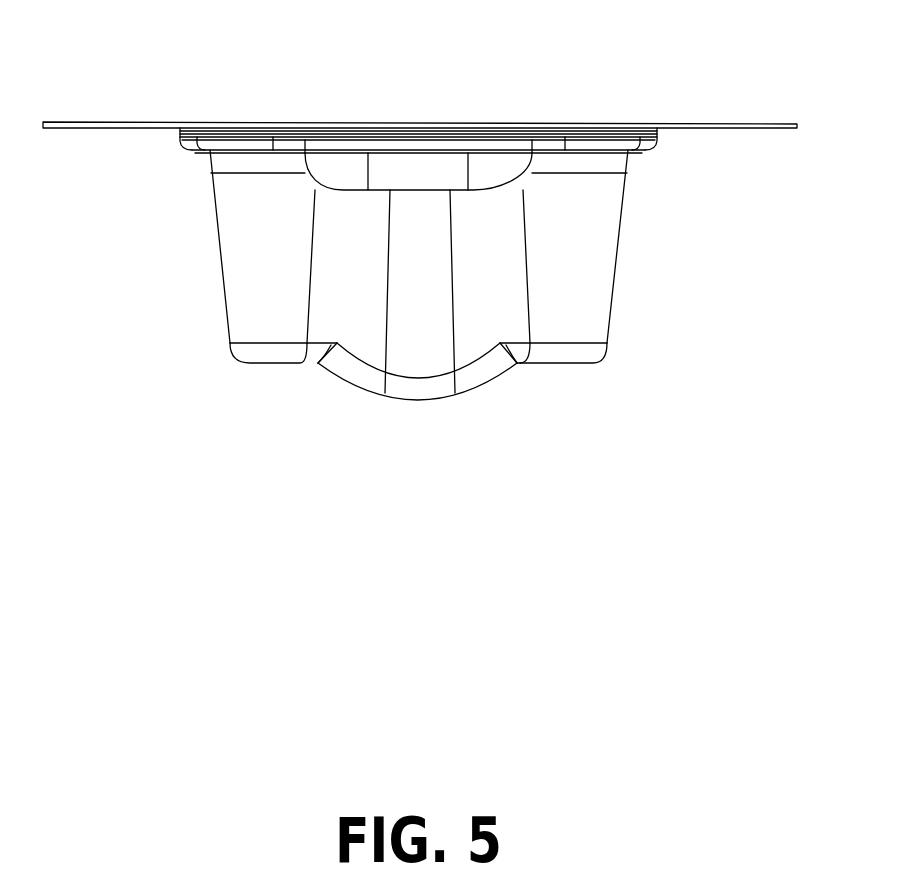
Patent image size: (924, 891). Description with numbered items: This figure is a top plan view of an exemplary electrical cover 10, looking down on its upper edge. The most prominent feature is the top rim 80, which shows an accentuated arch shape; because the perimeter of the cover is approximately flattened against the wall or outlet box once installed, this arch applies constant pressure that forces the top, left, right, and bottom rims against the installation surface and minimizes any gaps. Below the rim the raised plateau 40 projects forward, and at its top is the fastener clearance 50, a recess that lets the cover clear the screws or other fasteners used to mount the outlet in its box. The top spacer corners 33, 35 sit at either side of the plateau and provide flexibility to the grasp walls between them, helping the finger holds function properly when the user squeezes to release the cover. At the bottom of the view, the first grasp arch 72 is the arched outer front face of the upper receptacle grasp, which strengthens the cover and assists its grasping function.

The electrical cover 10 is at (666, 762).
The top spacer corner 33 is at (210, 167).
The top spacer corner 35 is at (628, 162).
The raised plateau 40 is at (515, 143).
The fastener clearance 50 is at (418, 178).
The first grasp arch 72 is at (418, 398).
The top rim 80 is at (713, 133).